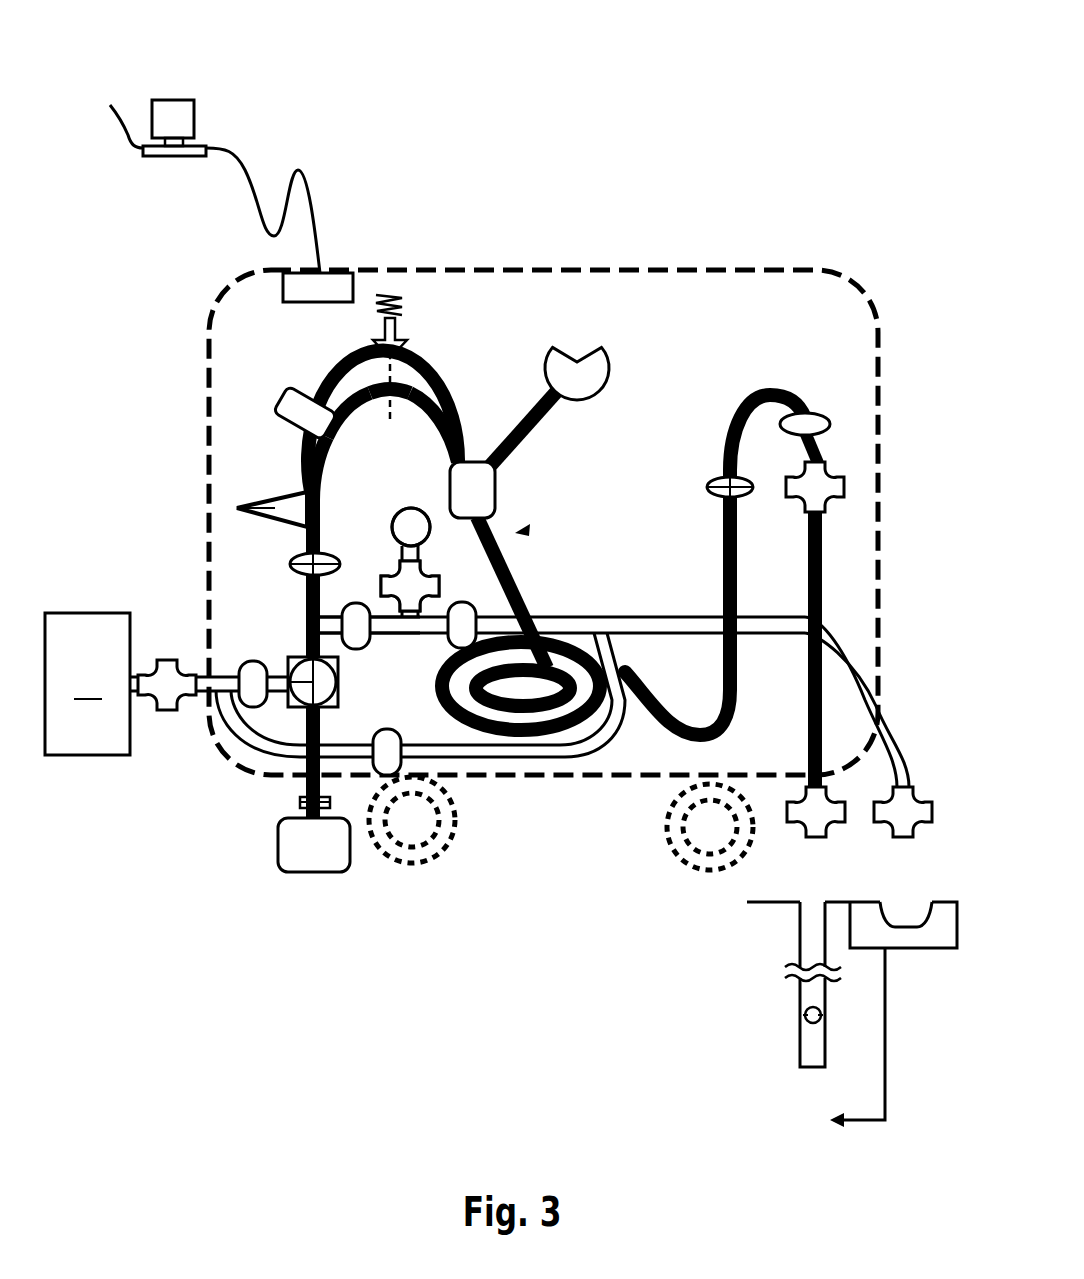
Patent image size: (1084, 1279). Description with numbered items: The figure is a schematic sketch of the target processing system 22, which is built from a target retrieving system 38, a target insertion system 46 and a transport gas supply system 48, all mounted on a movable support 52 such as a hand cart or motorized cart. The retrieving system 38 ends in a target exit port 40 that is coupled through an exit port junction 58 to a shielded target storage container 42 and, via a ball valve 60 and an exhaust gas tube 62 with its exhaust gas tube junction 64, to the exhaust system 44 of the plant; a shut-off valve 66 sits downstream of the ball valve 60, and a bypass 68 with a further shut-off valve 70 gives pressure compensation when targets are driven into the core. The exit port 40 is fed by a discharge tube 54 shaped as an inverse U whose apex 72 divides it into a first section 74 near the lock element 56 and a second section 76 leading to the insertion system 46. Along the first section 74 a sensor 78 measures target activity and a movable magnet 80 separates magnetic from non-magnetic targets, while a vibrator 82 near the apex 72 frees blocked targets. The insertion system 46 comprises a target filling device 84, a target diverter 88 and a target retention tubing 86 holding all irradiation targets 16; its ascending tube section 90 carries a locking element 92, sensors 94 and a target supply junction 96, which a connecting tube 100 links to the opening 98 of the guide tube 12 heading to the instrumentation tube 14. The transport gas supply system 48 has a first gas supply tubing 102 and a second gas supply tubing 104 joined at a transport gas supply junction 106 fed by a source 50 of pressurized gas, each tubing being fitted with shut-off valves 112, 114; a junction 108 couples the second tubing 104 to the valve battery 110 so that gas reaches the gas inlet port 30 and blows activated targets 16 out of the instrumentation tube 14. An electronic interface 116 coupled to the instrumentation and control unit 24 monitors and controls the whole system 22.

The guide tube 12 is at (810, 950).
The instrumentation tube 14 is at (813, 1047).
The irradiation targets 16 is at (805, 1014).
The target processing system 22 is at (600, 226).
The instrumentation and control unit 24 is at (178, 110).
The gas inlet port 30 is at (840, 1043).
The target retrieving system 38 is at (305, 470).
The target exit port 40 is at (308, 640).
The target storage container 42 is at (310, 875).
The exhaust system 44 is at (87, 684).
The target insertion system 46 is at (524, 531).
The transport gas supply system 48 is at (390, 566).
The source of pressurized gas 50 is at (410, 518).
The movable support 52 is at (537, 770).
The discharge tube 54 is at (360, 389).
The lock element 56 is at (292, 566).
The exit port junction 58 is at (300, 803).
The ball valve 60 is at (323, 692).
The exhaust gas tube 62 is at (200, 687).
The exhaust gas tube junction 64 is at (165, 668).
The shut-off valve 66 is at (252, 700).
The bypass 68 is at (467, 748).
The further shut-off valve 70 is at (388, 770).
The apex 72 is at (393, 385).
The first discharge tube section 74 is at (445, 412).
The second discharge tube section 76 is at (314, 452).
The sensor 78 is at (237, 508).
The magnet 80 is at (290, 405).
The vibrator 82 is at (412, 298).
The target filling device 84 is at (594, 368).
The target retention tubing 86 is at (523, 578).
The target diverter 88 is at (488, 496).
The ascending tube section 90 is at (723, 560).
The locking element 92 is at (707, 484).
The sensors 94 is at (808, 422).
The target supply junction 96 is at (833, 487).
The opening 98 is at (815, 907).
The connecting tube 100 is at (823, 590).
The first gas supply tubing 102 is at (385, 627).
The second gas supply tubing 104 is at (569, 625).
The transport gas supply junction 106 is at (410, 588).
The junction 108 is at (903, 923).
The valve battery 110 is at (903, 937).
The shut-off valve 112 is at (356, 606).
The shut-off valve 114 is at (459, 607).
The electronic interface 116 is at (335, 283).